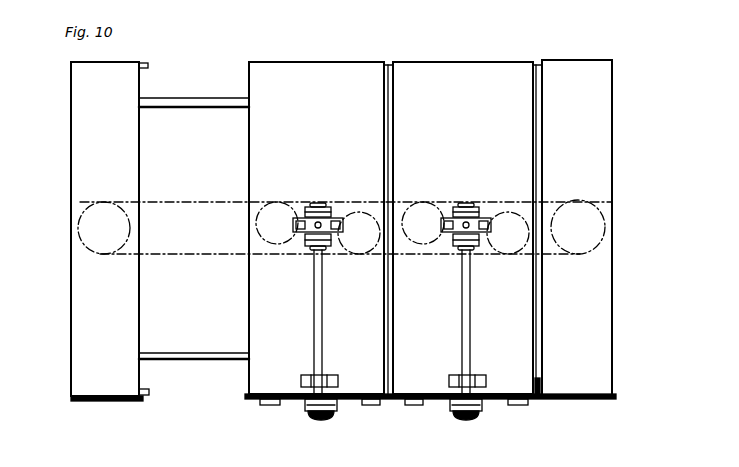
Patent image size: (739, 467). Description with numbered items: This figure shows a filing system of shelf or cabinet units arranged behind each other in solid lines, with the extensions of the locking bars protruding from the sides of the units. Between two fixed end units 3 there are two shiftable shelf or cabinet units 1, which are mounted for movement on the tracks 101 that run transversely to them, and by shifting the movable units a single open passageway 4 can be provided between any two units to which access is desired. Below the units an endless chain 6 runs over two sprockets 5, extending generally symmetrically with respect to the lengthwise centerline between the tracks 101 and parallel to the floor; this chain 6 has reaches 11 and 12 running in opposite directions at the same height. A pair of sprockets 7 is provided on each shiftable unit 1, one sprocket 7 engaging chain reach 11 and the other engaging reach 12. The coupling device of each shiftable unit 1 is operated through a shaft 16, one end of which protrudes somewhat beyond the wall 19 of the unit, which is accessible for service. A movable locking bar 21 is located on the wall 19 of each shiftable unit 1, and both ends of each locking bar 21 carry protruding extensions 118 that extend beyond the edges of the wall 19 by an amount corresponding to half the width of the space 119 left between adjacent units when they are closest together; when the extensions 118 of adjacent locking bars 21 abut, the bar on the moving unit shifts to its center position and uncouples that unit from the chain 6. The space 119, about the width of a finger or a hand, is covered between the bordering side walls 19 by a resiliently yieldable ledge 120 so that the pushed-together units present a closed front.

The shiftable shelf or cabinet unit 1 is at (318, 99).
The fixed shelf or cabinet unit 3 is at (112, 99).
The passageway 4 is at (199, 166).
The sprocket 5 is at (86, 226).
The endless chain 6 is at (207, 255).
The sprocket 7 is at (277, 240).
The chain reach 11 is at (559, 199).
The chain reach 12 is at (553, 256).
The shaft 16 is at (318, 324).
The front wall / side wall 19 is at (355, 402).
The locking bar 21 is at (292, 402).
The track 101 is at (190, 101).
The extension 118 is at (247, 396).
The space 119 is at (389, 183).
The ledge 120 is at (387, 62).